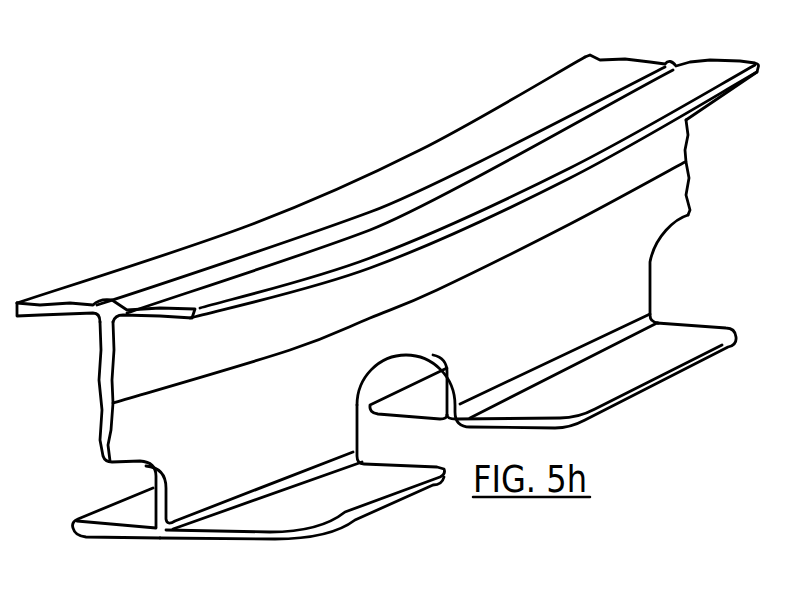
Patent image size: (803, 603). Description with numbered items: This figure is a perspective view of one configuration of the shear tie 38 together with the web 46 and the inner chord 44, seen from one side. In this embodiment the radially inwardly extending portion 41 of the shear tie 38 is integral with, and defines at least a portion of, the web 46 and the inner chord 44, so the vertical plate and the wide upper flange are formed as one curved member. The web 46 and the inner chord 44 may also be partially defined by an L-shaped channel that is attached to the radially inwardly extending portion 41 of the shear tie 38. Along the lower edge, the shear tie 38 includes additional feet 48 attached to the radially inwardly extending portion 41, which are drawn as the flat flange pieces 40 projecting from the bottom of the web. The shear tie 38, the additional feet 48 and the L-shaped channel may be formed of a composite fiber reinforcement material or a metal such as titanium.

The shear tie 38 is at (123, 431).
The foot flange 40 is at (332, 502).
The radially inwardly extending portion 41 is at (650, 283).
The inner chord 44 is at (705, 73).
The web 46 is at (130, 353).
The additional feet 48 is at (119, 517).